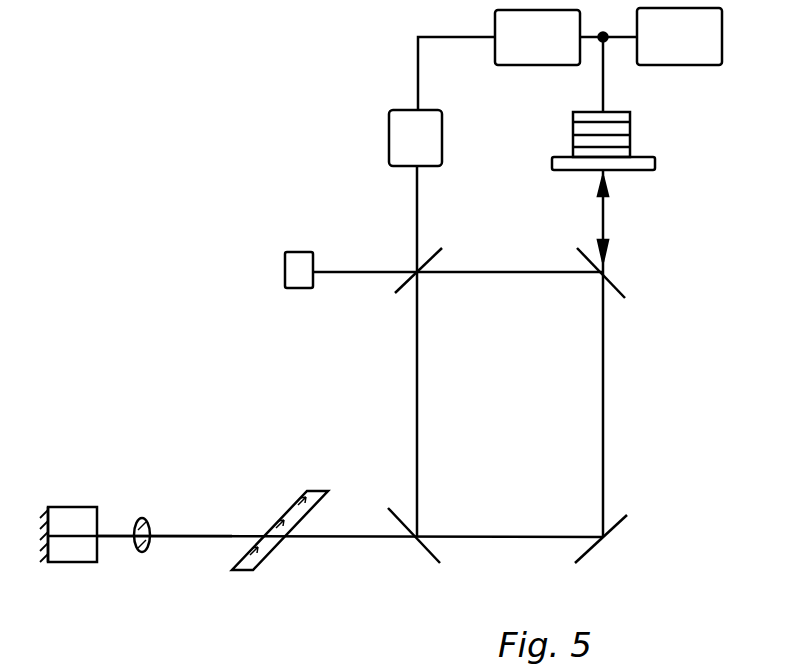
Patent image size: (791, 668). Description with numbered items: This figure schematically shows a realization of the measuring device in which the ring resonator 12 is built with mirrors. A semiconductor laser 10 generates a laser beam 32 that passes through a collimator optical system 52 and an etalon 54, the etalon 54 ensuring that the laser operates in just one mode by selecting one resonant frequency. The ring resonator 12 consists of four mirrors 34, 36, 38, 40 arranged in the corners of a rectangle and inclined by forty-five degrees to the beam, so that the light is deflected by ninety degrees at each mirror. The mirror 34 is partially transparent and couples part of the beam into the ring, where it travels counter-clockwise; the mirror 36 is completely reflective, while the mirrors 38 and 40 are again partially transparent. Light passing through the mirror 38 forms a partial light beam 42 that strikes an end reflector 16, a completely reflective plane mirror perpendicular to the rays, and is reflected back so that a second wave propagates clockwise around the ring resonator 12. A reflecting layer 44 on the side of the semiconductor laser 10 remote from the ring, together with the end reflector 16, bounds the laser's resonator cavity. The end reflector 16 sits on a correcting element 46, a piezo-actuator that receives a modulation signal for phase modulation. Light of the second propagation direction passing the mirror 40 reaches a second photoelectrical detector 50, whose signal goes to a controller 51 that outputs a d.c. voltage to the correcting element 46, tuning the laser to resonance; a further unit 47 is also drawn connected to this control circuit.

The semiconductor laser 10 is at (80, 547).
The ring resonator 12 is at (350, 351).
The end reflector 16 is at (655, 163).
The laser beam 32 is at (205, 534).
The partially transparent mirror 34 is at (424, 548).
The completely reflective mirror 36 is at (613, 528).
The partially transparent mirror 38 is at (613, 284).
The partially transparent mirror 40 is at (434, 255).
The partial light beam 42 is at (604, 218).
The reflecting layer 44 is at (44, 508).
The correcting element 46 is at (617, 137).
The control unit 47 is at (679, 36).
The second photoelectrical detector 50 is at (406, 125).
The controller 51 is at (566, 37).
The collimator optical system 52 is at (147, 553).
The etalon 54 is at (255, 572).